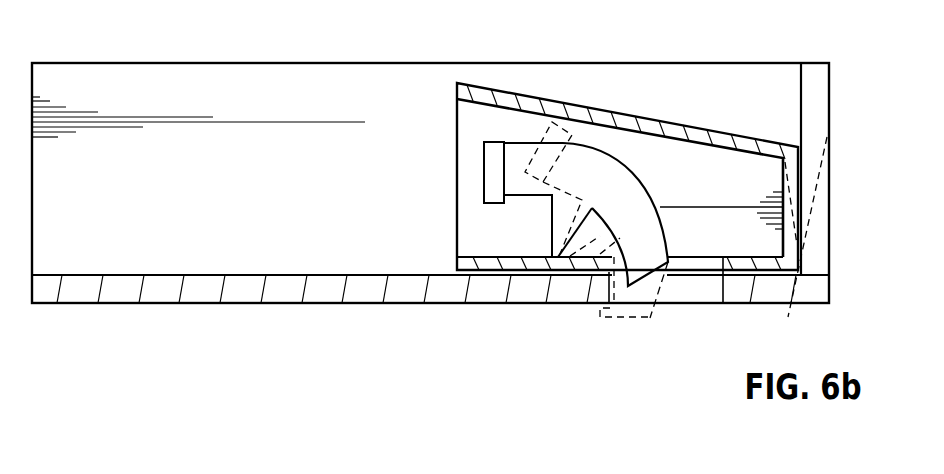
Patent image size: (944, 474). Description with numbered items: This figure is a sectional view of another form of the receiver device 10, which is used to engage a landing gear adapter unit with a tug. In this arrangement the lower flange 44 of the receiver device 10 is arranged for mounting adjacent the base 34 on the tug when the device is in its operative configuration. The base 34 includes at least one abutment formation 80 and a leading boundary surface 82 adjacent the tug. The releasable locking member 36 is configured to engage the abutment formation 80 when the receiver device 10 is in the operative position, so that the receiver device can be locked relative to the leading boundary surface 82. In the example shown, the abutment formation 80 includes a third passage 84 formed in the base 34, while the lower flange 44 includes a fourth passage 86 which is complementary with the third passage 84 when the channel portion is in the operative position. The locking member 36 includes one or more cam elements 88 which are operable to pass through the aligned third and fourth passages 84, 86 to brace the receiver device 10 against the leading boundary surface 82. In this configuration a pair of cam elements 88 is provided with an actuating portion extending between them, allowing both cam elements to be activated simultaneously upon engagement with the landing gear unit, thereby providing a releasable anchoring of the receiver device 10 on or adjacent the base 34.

The receiver device 10 is at (453, 107).
The base 34 is at (778, 328).
The releasable locking member 36 is at (460, 168).
The lower flange 44 is at (569, 258).
The abutment formation 80 is at (613, 294).
The leading boundary surface 82 is at (800, 95).
The third passage 84 is at (676, 308).
The fourth passage 86 is at (712, 235).
The cam element 88 is at (618, 185).